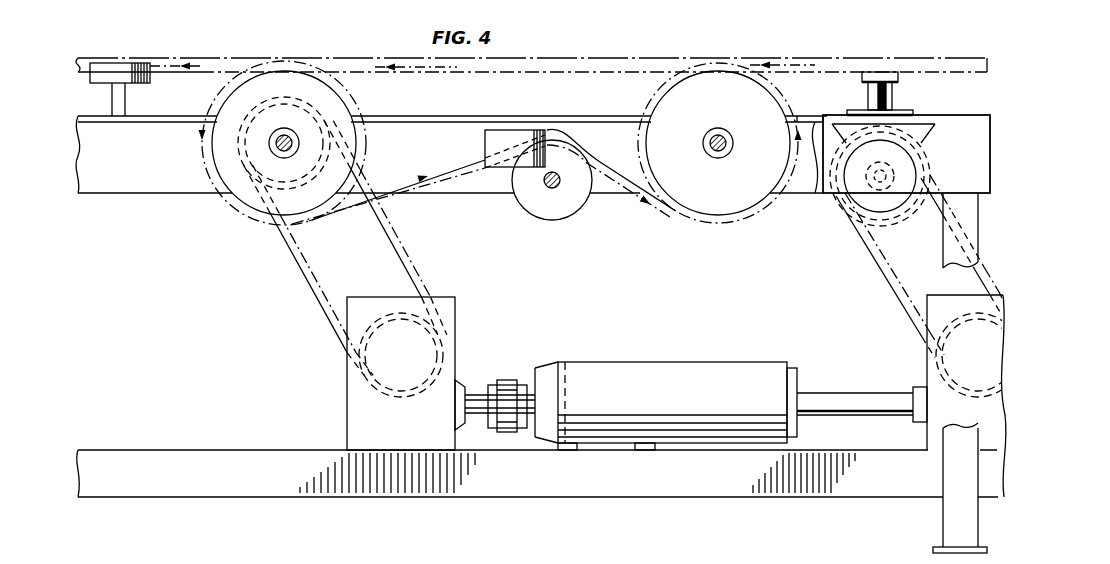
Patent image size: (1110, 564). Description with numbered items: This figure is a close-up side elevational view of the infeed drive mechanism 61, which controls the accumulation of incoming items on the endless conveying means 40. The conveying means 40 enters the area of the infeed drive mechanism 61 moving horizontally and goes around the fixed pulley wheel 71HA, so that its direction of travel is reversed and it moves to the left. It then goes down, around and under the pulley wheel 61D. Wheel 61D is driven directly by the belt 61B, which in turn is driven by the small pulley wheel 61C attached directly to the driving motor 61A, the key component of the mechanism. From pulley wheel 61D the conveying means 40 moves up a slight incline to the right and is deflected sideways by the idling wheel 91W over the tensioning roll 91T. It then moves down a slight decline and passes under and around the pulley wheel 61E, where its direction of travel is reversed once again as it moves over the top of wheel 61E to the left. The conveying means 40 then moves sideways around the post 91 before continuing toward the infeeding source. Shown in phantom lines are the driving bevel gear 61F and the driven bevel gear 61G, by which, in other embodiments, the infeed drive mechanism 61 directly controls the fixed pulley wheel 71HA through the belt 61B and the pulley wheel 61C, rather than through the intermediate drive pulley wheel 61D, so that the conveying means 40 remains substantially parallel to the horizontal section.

The endless conveying means 40 is at (228, 60).
The infeed drive mechanism 61 is at (391, 34).
The driving motor 61A is at (568, 362).
The belt 61B is at (300, 272).
The small pulley wheel 61C is at (372, 356).
The pulley wheel 61D is at (240, 186).
The pulley wheel 61E is at (710, 83).
The driving bevel gear 61F is at (925, 150).
The driven bevel gear 61G is at (935, 123).
The fixed pulley wheel 71HA is at (908, 62).
The post 91 is at (118, 70).
The idling wheel 91W is at (485, 143).
The tensioning roll 91T is at (525, 200).